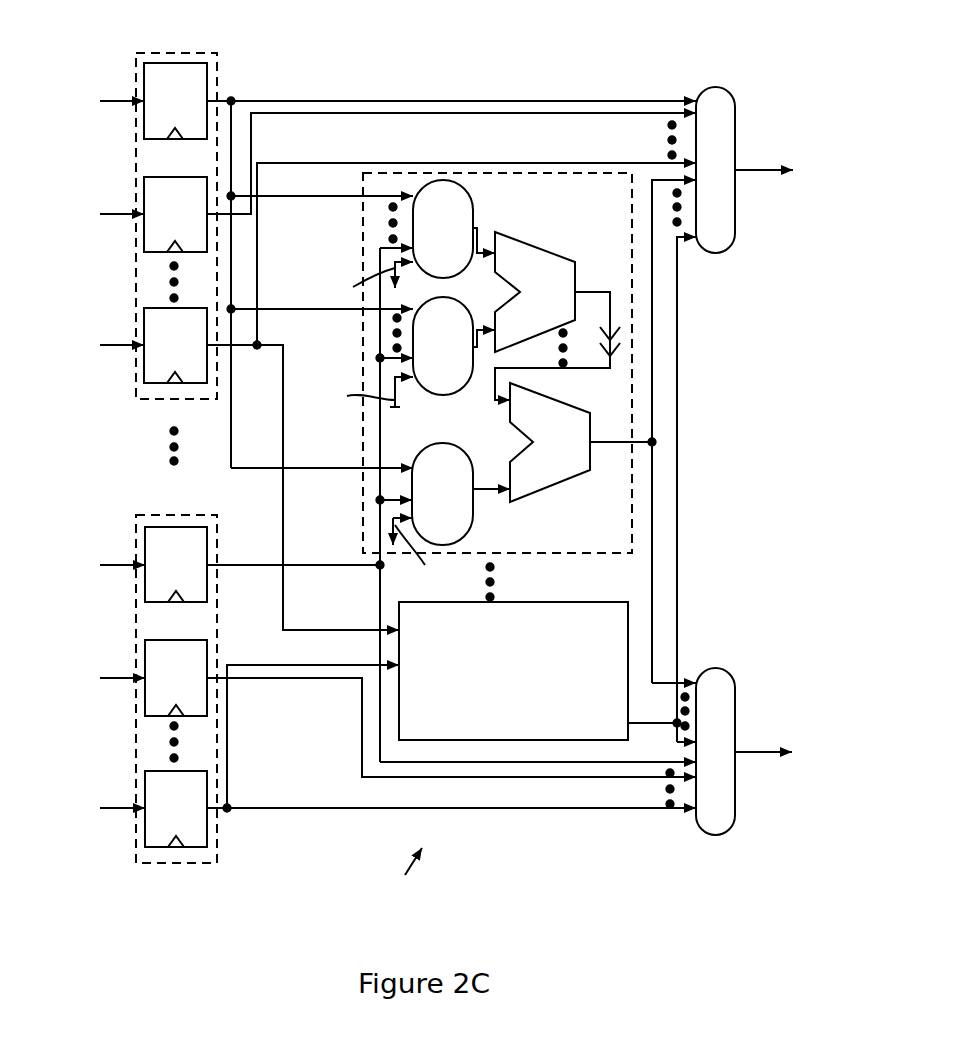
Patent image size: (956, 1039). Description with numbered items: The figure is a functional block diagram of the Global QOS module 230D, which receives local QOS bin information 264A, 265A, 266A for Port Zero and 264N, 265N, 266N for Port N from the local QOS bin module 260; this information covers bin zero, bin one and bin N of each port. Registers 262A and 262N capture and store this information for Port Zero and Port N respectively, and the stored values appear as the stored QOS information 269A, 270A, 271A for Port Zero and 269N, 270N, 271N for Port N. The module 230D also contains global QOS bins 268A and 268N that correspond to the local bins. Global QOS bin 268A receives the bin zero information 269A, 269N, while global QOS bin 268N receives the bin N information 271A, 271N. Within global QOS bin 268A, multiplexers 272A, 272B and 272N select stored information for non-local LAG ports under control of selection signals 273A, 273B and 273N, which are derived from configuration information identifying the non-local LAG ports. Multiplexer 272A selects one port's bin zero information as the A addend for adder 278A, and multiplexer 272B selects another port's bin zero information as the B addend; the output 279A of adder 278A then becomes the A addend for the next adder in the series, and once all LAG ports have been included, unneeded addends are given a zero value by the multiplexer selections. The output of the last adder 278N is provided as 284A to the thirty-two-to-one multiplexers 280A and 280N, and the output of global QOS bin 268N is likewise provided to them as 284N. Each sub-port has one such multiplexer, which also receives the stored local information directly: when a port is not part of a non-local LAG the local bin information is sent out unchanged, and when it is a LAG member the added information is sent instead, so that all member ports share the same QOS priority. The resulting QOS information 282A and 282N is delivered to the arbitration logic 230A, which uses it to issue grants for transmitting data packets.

The local QOS bin module 260 is at (61, 215).
The register 262A is at (143, 400).
The register 262N is at (175, 865).
The local QOS bin information 264A is at (117, 100).
The local QOS bin information 265A is at (117, 213).
The local QOS bin information 266A is at (117, 344).
The local QOS bin information 264N is at (112, 564).
The local QOS bin information 265N is at (112, 677).
The local QOS bin information 266N is at (112, 807).
The stored QOS bin 0 information 269A is at (490, 100).
The stored QOS bin 1 information 270A is at (291, 117).
The stored QOS bin N information 271A is at (283, 483).
The stored QOS bin 0 information 269N is at (250, 567).
The stored QOS bin 1 information 270N is at (300, 681).
The stored QOS bin N information 271N is at (300, 811).
The global QOS bin 268A is at (632, 413).
The global QOS bin 268N is at (470, 731).
The multiplexer 272A is at (430, 180).
The multiplexer 272B is at (410, 320).
The multiplexer 272N is at (473, 532).
The selection signal 273A is at (351, 284).
The selection signal 273B is at (351, 396).
The selection signal 273N is at (425, 557).
The adder 278A is at (540, 246).
The adder 278N is at (580, 477).
The adder output 279A is at (612, 301).
The global QOS bin 0 output 284A is at (652, 362).
The global QOS bin N output 284N is at (677, 458).
The multiplexer 280A is at (708, 87).
The multiplexer 280N is at (720, 668).
The QOS information 282A is at (745, 168).
The QOS information 282N is at (767, 747).
The arbitration logic 230A is at (787, 522).
The Global QOS module 230D is at (404, 890).